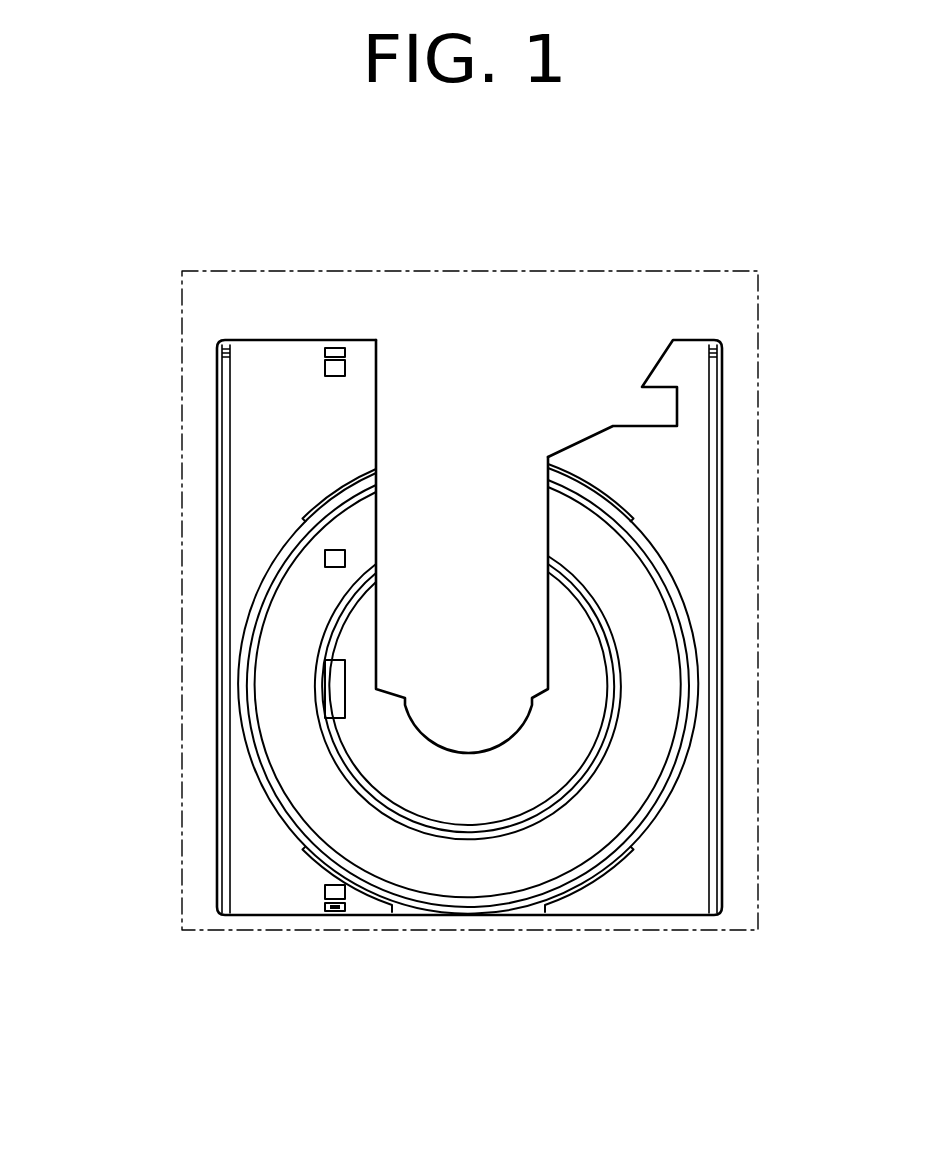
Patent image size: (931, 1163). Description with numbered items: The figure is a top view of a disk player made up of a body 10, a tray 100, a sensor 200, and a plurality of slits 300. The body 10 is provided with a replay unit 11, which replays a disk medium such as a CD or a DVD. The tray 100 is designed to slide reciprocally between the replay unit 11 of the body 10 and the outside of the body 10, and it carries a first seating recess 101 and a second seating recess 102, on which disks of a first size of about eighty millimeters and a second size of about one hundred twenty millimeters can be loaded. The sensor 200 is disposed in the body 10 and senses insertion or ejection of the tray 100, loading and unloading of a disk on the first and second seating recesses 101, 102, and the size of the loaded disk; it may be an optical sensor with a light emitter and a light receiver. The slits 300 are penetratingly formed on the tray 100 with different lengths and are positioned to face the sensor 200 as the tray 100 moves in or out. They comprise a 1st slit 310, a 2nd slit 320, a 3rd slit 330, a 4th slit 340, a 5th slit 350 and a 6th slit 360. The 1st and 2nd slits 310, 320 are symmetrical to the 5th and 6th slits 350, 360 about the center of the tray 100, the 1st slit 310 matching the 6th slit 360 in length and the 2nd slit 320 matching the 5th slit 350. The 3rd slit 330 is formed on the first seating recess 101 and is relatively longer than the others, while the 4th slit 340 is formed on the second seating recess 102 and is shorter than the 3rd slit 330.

The body 10 is at (697, 268).
The replay unit 11 is at (478, 717).
The tray 100 is at (712, 515).
The first seating recess 101 is at (595, 705).
The second seating recess 102 is at (645, 778).
The sensor 200 is at (335, 912).
The slits 300 is at (108, 460).
The 1st slit 310 is at (325, 908).
The 2nd slit 320 is at (325, 891).
The 3rd slit 330 is at (325, 688).
The 4th slit 340 is at (325, 558).
The 5th slit 350 is at (325, 367).
The 6th slit 360 is at (325, 353).